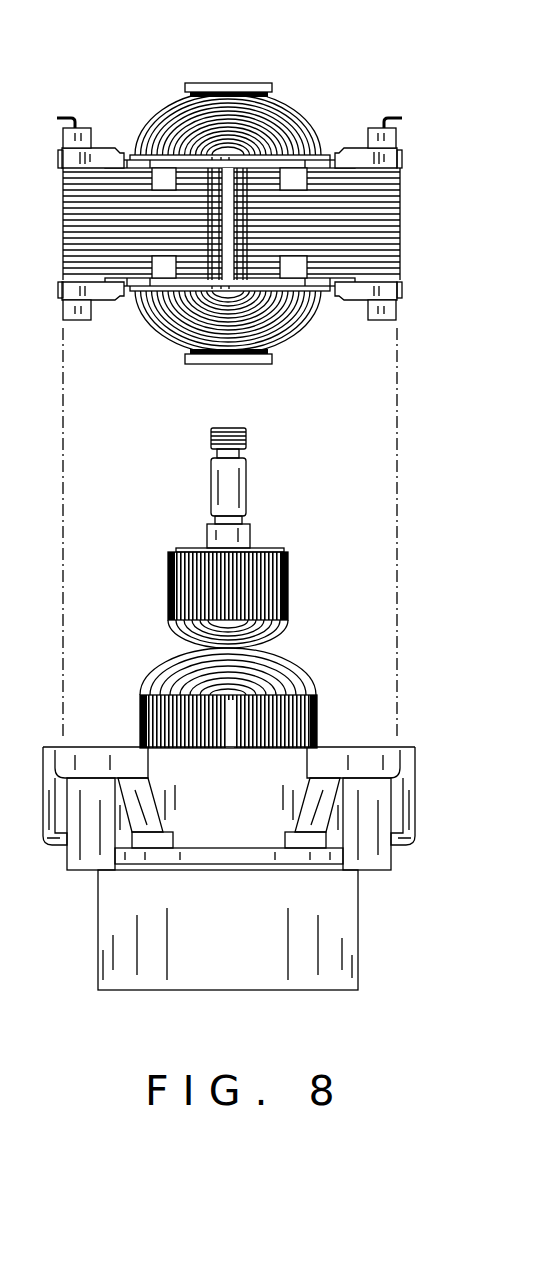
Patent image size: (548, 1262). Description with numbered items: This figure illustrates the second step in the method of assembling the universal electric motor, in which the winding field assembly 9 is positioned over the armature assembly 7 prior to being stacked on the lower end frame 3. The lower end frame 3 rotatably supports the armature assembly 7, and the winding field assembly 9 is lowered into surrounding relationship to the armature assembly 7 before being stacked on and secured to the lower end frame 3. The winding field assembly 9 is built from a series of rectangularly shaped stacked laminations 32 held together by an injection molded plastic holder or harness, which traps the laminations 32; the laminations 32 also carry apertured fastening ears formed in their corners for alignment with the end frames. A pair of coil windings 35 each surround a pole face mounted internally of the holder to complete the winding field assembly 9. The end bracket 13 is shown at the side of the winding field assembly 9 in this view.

The winding field assembly 9 is at (141, 133).
The coil windings 35 is at (283, 120).
The end bracket 13 is at (76, 160).
The laminations 32 is at (76, 228).
The armature assembly 7 is at (311, 597).
The lower end frame 3 is at (89, 947).